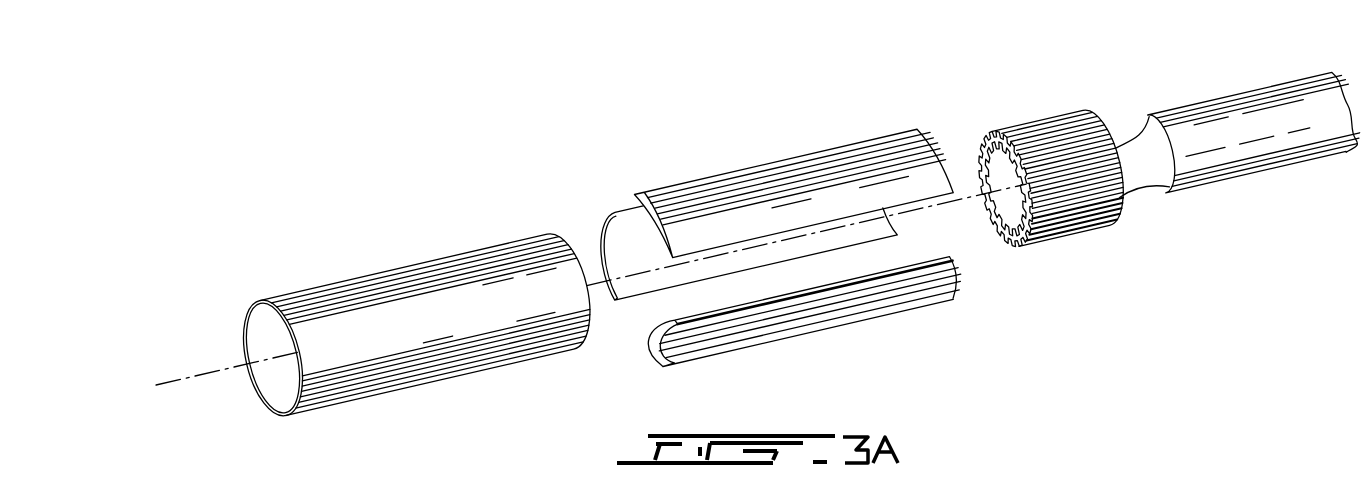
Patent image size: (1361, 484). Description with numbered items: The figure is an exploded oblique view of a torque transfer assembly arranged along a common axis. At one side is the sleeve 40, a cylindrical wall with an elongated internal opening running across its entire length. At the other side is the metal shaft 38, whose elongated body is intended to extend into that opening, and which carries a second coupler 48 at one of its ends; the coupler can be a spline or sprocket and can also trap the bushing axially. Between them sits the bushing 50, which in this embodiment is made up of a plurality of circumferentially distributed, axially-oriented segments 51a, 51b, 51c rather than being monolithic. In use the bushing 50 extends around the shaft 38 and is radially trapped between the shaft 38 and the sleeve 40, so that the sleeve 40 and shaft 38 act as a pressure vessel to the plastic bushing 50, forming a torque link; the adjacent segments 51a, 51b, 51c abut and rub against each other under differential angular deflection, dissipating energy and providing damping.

The shaft 38 is at (1260, 140).
The sleeve 40 is at (403, 293).
The second coupler 48 is at (1063, 147).
The bushing 50 is at (682, 146).
The segment 51a is at (775, 197).
The segment 51b is at (617, 262).
The segment 51c is at (910, 293).